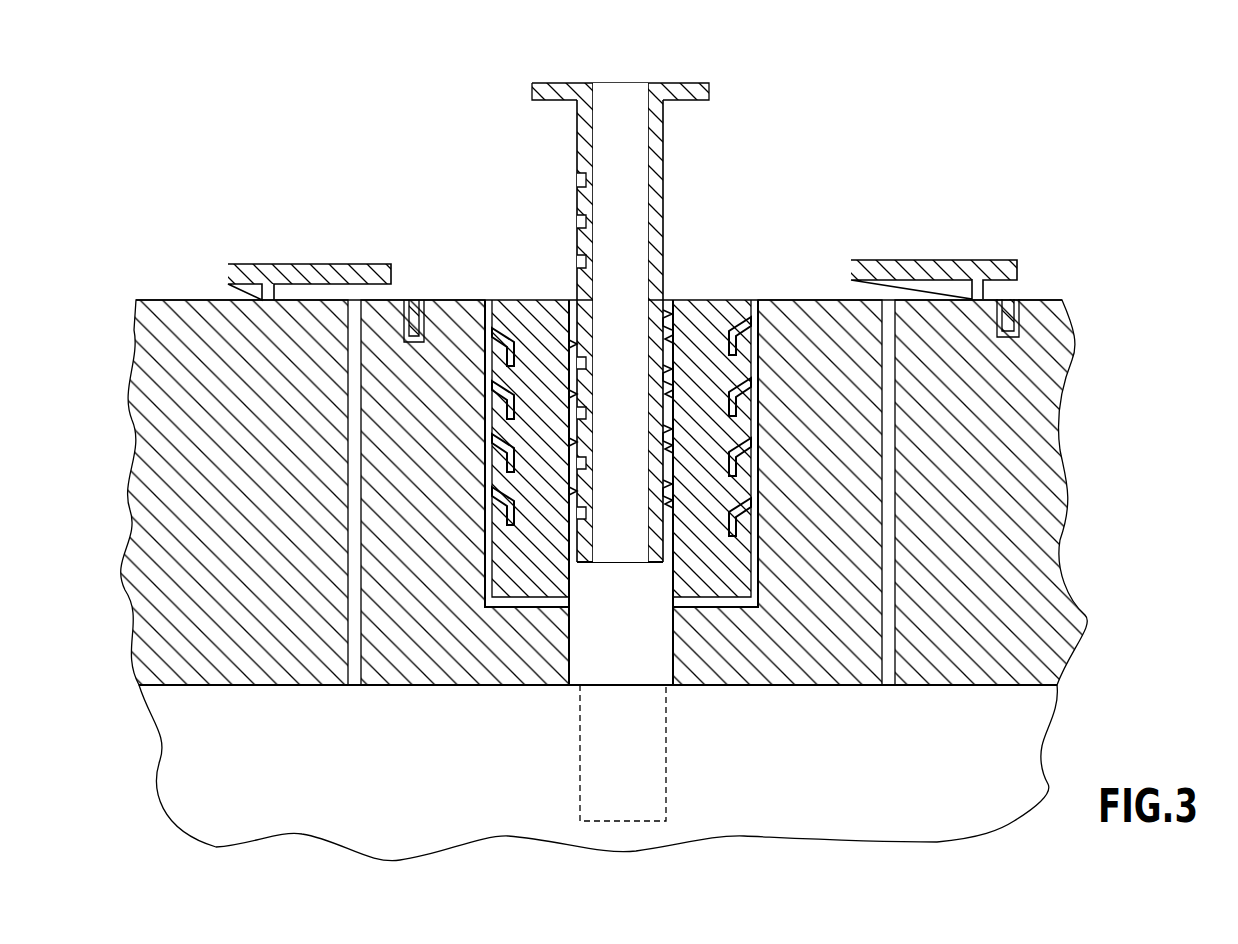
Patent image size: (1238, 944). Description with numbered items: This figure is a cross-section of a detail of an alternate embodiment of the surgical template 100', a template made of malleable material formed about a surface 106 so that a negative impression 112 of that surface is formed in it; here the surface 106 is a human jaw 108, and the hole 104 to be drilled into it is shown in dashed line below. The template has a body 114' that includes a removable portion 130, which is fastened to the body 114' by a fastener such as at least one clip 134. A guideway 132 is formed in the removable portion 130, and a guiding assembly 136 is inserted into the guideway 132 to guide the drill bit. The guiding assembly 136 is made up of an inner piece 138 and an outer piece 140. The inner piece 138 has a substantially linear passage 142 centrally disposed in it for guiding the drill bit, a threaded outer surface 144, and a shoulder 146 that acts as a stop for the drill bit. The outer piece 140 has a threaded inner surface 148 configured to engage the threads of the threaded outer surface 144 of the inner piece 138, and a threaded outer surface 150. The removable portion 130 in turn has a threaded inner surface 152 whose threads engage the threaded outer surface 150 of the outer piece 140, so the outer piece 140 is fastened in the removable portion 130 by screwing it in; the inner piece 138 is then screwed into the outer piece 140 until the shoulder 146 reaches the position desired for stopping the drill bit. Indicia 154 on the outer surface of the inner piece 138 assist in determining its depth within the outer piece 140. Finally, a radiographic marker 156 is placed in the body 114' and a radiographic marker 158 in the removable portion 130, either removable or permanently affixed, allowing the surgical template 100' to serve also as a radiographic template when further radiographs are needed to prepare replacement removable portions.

The surgical template 100' is at (599, 216).
The hole 104 is at (666, 787).
The surface 106 is at (531, 686).
The human jaw 108 is at (899, 806).
The negative impression 112 is at (962, 686).
The body 114' is at (1007, 471).
The removable portion 130 is at (794, 307).
The guideway 132 is at (672, 642).
The clip 134 is at (916, 260).
The guiding assembly 136 is at (712, 201).
The inner piece 138 is at (663, 131).
The outer piece 140 is at (720, 307).
The substantially linear passage 142 is at (638, 321).
The threaded outer surface 144 is at (582, 318).
The shoulder 146 is at (687, 83).
The threaded inner surface 148 is at (660, 318).
The threaded outer surface 150 is at (486, 328).
The threaded inner surface 152 is at (474, 354).
The indicia 154 is at (578, 183).
The radiographic marker 156 is at (1013, 298).
The radiographic marker 158 is at (408, 296).